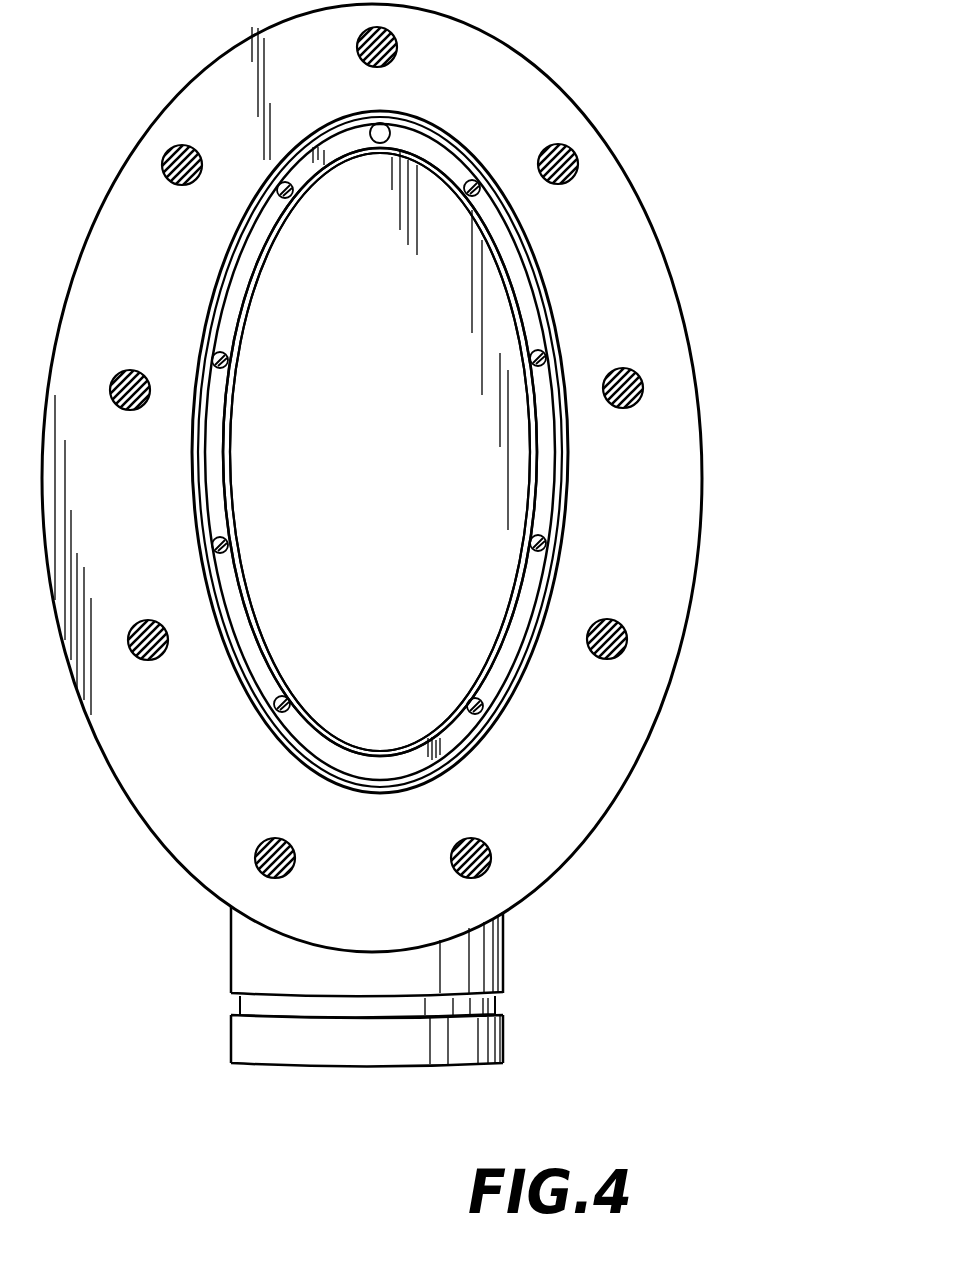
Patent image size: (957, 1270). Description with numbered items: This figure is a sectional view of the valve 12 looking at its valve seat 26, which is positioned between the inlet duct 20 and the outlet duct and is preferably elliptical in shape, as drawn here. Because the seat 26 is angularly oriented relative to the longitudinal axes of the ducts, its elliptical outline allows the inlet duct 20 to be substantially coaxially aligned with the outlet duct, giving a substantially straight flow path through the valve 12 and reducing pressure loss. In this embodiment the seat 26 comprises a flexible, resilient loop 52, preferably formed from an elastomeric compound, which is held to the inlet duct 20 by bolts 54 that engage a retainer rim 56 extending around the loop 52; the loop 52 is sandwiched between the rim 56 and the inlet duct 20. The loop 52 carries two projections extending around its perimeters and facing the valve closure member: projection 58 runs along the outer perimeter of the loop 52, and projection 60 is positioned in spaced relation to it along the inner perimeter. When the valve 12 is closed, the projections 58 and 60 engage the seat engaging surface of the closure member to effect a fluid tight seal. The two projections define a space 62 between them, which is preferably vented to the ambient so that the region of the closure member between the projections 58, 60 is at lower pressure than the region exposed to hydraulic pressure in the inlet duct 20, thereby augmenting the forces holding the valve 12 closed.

The valve 12 is at (690, 297).
The inlet duct 20 is at (242, 955).
The valve seat 26 is at (545, 478).
The flexible, resilient loop 52 is at (230, 452).
The bolts 54 is at (226, 548).
The retainer rim 56 is at (245, 640).
The projection 58 is at (258, 697).
The projection 60 is at (300, 708).
The space 62 is at (357, 763).